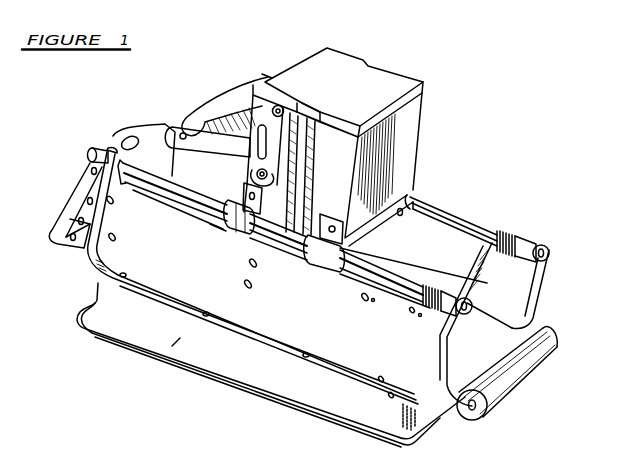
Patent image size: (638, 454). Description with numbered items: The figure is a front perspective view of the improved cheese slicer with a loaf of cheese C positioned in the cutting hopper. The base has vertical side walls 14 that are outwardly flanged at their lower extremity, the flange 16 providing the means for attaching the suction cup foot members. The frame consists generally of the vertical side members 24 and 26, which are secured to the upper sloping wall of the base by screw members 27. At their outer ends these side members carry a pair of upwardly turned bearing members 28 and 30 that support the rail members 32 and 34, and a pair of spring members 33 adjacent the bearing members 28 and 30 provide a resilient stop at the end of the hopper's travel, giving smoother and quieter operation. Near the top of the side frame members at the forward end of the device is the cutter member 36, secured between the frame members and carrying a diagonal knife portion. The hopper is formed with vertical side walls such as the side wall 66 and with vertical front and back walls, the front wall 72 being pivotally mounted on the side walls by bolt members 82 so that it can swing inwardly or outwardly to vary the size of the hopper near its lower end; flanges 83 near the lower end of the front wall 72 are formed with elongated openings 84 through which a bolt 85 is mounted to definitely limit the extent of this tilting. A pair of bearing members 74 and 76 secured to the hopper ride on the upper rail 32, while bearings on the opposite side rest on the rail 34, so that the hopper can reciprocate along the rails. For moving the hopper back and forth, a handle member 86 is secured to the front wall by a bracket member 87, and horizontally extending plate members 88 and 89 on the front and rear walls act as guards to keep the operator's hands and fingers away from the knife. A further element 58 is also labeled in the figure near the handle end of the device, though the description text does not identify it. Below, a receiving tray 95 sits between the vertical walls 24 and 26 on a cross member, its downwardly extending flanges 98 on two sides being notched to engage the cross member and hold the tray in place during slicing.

The loaf of cheese C is at (388, 76).
The vertical side walls 14 is at (176, 341).
The flange 16 is at (93, 330).
The vertical side member 24 is at (116, 254).
The vertical side member 26 is at (536, 272).
The screw members 27 is at (120, 277).
The bearing member 28 is at (113, 148).
The bearing member 30 is at (530, 240).
The rail member 32 is at (188, 192).
The spring members 33 is at (508, 230).
The rail member 34 is at (463, 222).
The cutter member 36 is at (480, 268).
The mounting plate 58 is at (152, 140).
The vertical side wall 66 is at (333, 137).
The front wall 72 is at (262, 74).
The bearing member 74 is at (243, 230).
The bearing member 76 is at (322, 260).
The bolt members 82 is at (281, 107).
The flanges 83 is at (230, 208).
The elongated openings 84 is at (220, 210).
The bolt 85 is at (268, 170).
The handle member 86 is at (218, 102).
The bracket member 87 is at (229, 146).
The plate member 88 is at (413, 226).
The plate member 89 is at (178, 178).
The receiving tray 95 is at (492, 355).
The downwardly extending flanges 98 is at (454, 410).